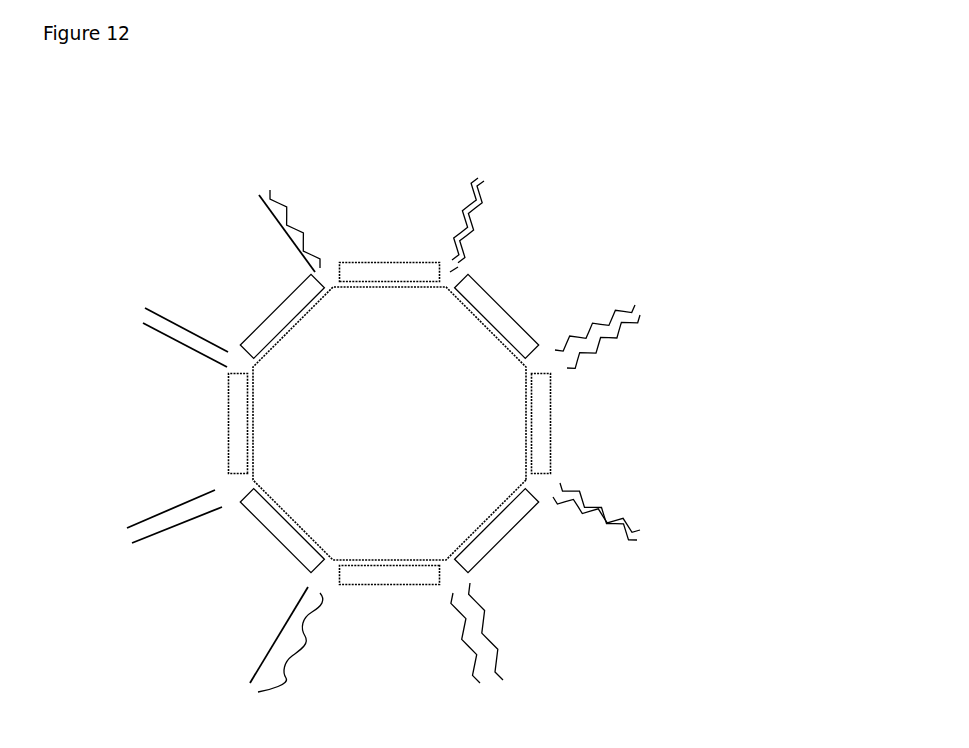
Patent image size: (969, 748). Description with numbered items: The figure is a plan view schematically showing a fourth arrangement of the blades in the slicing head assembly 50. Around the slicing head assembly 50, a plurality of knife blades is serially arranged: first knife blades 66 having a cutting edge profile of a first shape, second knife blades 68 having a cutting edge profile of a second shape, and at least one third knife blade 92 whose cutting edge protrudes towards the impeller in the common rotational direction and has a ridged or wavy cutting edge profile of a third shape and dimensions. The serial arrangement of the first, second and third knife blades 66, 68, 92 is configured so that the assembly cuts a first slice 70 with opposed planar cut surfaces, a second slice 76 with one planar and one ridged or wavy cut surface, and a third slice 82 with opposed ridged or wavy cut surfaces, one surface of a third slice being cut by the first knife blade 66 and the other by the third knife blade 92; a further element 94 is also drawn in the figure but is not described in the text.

The slicing head assembly 50 is at (588, 390).
The first knife blade 66 is at (283, 523).
The second knife blade 68 is at (458, 258).
The first slice 70 is at (172, 317).
The second slice 76 is at (257, 215).
The third slice 82 is at (478, 232).
The third knife blade 92 is at (440, 586).
The flexible damper 94 is at (305, 637).